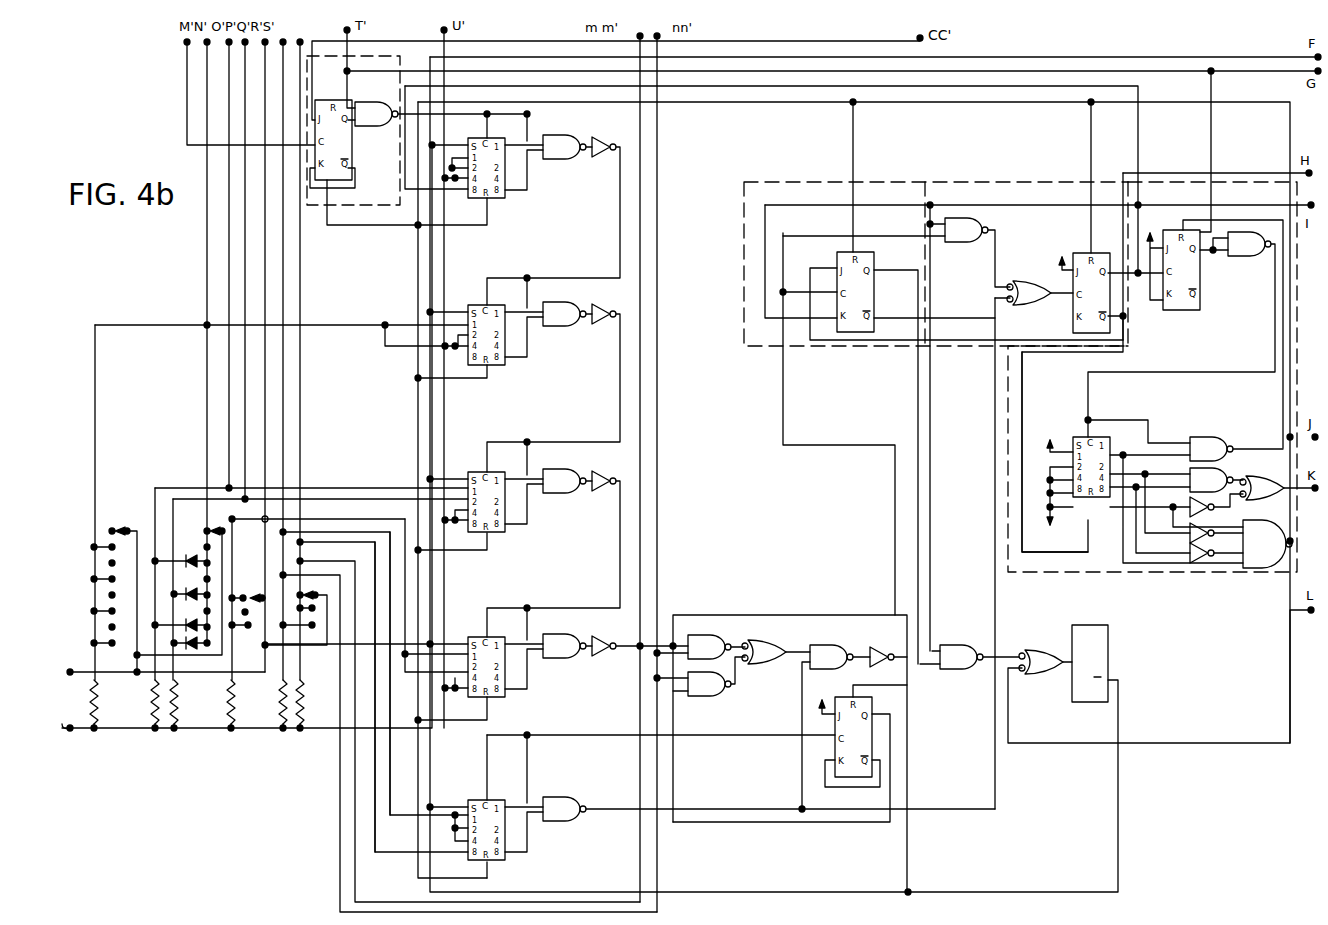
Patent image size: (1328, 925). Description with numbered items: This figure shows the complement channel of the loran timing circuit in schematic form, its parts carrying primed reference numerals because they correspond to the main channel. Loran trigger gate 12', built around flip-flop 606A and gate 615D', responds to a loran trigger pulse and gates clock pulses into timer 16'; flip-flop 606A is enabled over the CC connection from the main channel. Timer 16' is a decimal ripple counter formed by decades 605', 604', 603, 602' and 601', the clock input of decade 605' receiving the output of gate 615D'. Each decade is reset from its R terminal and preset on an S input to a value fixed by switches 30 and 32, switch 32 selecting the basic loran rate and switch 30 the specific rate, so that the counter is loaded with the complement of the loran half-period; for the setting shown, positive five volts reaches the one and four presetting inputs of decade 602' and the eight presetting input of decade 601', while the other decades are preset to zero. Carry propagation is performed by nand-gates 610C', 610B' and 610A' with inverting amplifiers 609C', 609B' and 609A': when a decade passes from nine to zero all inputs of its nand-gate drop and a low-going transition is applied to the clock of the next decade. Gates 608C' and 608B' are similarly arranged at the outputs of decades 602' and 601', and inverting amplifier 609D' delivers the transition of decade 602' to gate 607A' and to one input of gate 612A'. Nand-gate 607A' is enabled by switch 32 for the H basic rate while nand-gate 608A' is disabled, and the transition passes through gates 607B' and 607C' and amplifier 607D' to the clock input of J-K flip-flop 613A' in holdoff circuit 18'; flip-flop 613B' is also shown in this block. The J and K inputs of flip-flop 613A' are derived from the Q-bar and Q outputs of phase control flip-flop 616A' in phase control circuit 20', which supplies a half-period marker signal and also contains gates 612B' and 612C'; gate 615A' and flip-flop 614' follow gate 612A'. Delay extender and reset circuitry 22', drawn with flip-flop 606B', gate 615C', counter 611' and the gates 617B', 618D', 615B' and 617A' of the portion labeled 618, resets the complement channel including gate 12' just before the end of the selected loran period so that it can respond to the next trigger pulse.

The loran trigger gate 12' is at (353, 152).
The flip-flop 606A is at (398, 162).
The gate 615D' is at (437, 153).
The decade 605' is at (489, 166).
The nand-gate 610C' is at (545, 150).
The inverting amplifier 609C' is at (562, 208).
The decade 604' is at (300, 318).
The nand-gate 610B' is at (545, 317).
The inverting amplifier 609B' is at (558, 377).
The decade 603 is at (330, 500).
The nand-gate 610A' is at (548, 483).
The inverting amplifier 609A' is at (558, 541).
The decade 602' is at (385, 621).
The NAND gate 608C' is at (551, 648).
The inverting amplifier 609D' is at (635, 632).
The decade 601' is at (440, 705).
The NAND gate 608B' is at (750, 792).
The timer 16' is at (790, 734).
The nand-gate 607A' is at (710, 637).
The nand-gate 608A' is at (710, 684).
The gate 607B' is at (776, 662).
The gate 607C' is at (830, 712).
The amplifier 607D' is at (893, 665).
The JK flip-flop 613B' is at (697, 746).
The gate 612A' is at (969, 644).
The NOR gate 615A' is at (1159, 676).
The T flip-flop 614' is at (1113, 660).
The holdoff circuit 18' is at (936, 264).
The phase control circuit 20' is at (1038, 264).
The delay extender and reset circuitry 22' is at (1152, 377).
The J-K flip-flop 613A' is at (944, 434).
The NAND gate 612B' is at (906, 425).
The NOR gate 612C' is at (1034, 275).
The phase control flip-flop 616A' is at (1101, 278).
The JK flip-flop 606B' is at (1213, 334).
The NAND gate 615C' is at (1180, 334).
The counter 611' is at (1107, 468).
The NAND gate 617B' is at (1196, 437).
The NAND gate 618D' is at (1189, 470).
The NOR gate 615B' is at (1212, 497).
The NAND gate 617A' is at (1207, 529).
The decoder block 618 is at (1180, 555).
The switch 30 is at (220, 760).
The switch 32 is at (310, 760).